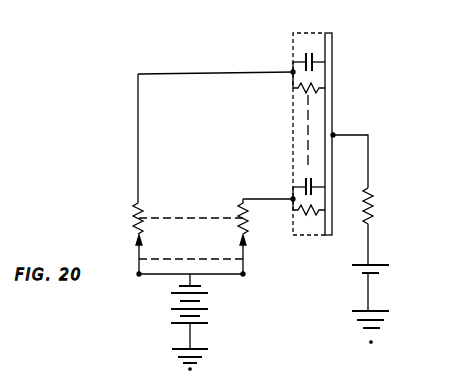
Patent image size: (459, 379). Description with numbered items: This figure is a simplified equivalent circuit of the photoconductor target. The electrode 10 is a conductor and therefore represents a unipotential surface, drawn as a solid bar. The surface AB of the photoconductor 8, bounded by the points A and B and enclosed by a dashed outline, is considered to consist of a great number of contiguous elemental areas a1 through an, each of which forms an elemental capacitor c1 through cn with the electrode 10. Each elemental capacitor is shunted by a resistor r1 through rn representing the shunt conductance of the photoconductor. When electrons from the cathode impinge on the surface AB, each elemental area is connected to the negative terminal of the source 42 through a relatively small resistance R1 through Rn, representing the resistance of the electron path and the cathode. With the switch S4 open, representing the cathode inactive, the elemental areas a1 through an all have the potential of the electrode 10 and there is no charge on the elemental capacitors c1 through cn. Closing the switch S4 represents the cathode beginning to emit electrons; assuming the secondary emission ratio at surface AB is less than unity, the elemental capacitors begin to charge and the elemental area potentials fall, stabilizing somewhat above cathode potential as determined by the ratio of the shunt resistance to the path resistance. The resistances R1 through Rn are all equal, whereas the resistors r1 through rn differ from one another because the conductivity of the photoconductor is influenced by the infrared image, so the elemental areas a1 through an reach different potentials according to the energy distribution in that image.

The photoconductor 8 is at (308, 33).
The electrode 10 is at (330, 33).
The source 42 is at (173, 309).
The surface end A is at (284, 30).
The surface end B is at (285, 245).
The first resistance R1 is at (133, 215).
The nth resistance Rn is at (240, 212).
The switch S4 is at (135, 259).
The first elemental area a1 is at (292, 72).
The nth elemental area an is at (291, 197).
The first elemental capacitor c1 is at (300, 61).
The nth elemental capacitor cn is at (300, 181).
The first shunt resistor r1 is at (300, 92).
The nth shunt resistor rn is at (300, 214).